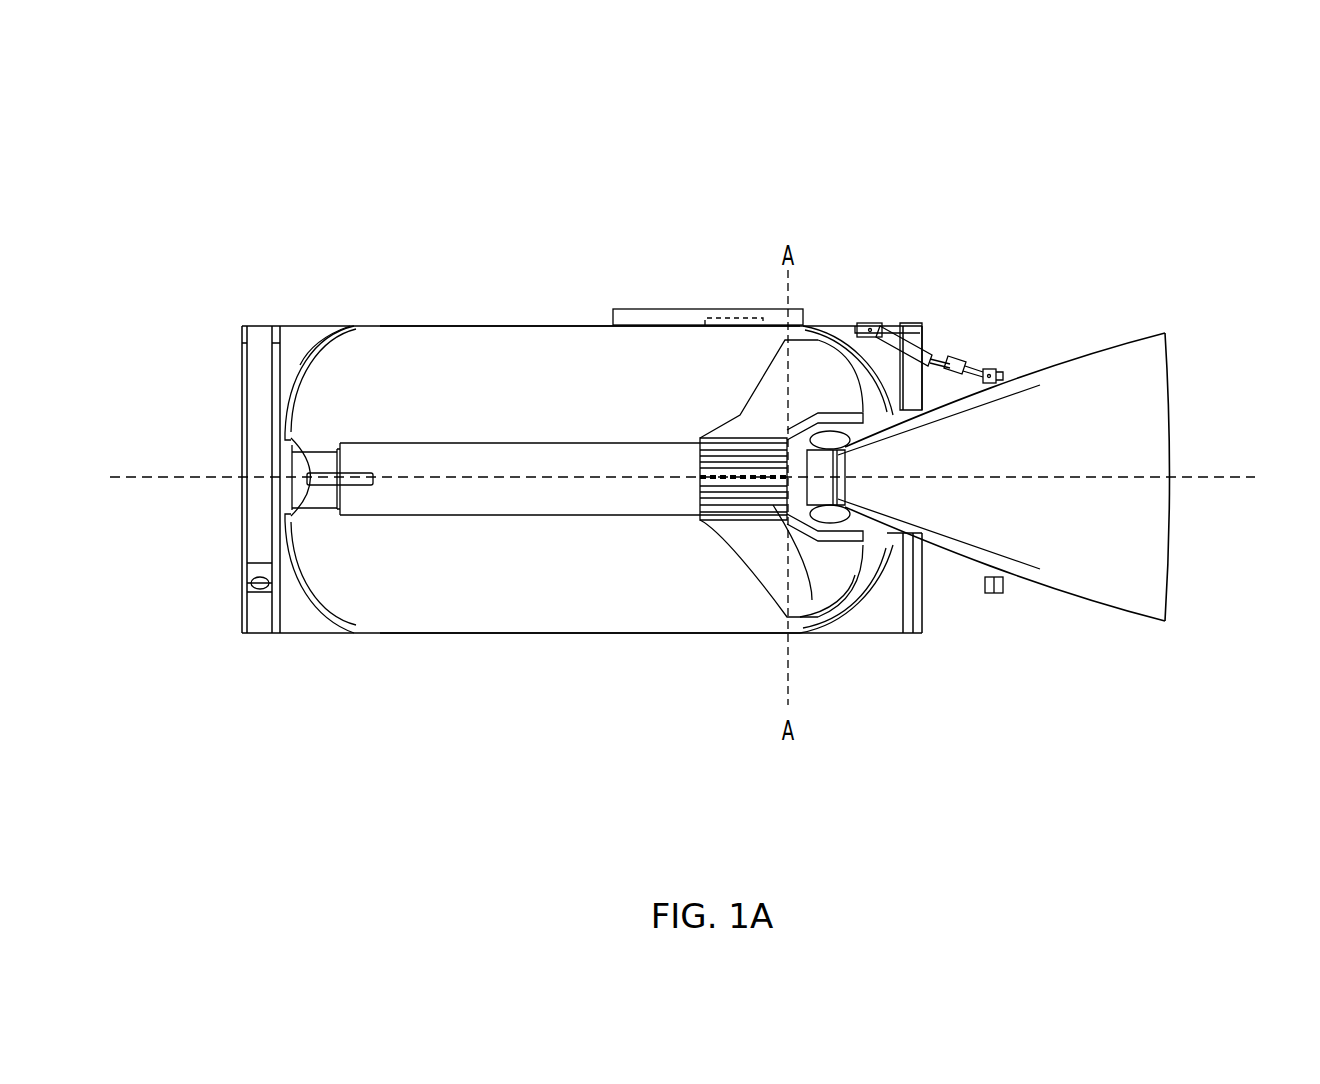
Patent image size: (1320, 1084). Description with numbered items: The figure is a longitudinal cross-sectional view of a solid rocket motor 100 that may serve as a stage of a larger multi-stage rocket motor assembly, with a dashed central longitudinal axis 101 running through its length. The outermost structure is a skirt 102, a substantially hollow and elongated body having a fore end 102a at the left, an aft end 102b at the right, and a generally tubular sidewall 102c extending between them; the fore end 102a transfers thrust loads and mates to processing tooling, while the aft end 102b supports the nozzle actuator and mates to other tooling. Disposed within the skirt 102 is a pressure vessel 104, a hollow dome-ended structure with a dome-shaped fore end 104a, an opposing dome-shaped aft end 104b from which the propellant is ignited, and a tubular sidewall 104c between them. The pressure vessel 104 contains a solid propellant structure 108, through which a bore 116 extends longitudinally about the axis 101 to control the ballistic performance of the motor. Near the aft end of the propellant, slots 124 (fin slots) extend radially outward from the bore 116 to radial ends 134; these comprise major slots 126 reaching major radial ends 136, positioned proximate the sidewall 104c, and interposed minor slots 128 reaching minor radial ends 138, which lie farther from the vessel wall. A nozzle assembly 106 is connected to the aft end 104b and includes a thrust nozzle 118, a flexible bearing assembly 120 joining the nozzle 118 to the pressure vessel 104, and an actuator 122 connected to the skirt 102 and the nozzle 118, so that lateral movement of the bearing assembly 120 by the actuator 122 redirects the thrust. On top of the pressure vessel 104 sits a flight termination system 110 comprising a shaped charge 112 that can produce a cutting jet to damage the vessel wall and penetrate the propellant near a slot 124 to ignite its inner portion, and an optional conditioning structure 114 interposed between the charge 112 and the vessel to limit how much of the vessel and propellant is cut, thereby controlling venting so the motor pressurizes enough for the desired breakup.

The solid rocket motor 100 is at (243, 141).
The central longitudinal axis 101 is at (1218, 470).
The skirt 102 is at (280, 306).
The fore end 102a is at (240, 352).
The aft end 102b is at (940, 638).
The tubular sidewall 102c is at (357, 325).
The pressure vessel 104 is at (432, 322).
The dome-shaped fore end 104a is at (284, 562).
The dome-shaped aft end 104b is at (890, 576).
The tubular sidewall 104c is at (447, 636).
The nozzle assembly 106 is at (1155, 182).
The solid propellant structure 108 is at (497, 362).
The flight termination system 110 is at (755, 152).
The shaped charge 112 is at (637, 317).
The conditioning structure 114 is at (713, 317).
The bore 116 is at (455, 508).
The thrust nozzle 118 is at (1113, 385).
The flexible bearing assembly 120 is at (905, 408).
The actuator 122 is at (903, 345).
The slots 124 is at (585, 685).
The major slots 126 is at (743, 507).
The minor slots 128 is at (763, 567).
The radial ends 134 is at (923, 723).
The major radial ends 136 is at (800, 617).
The minor radial ends 138 is at (773, 505).